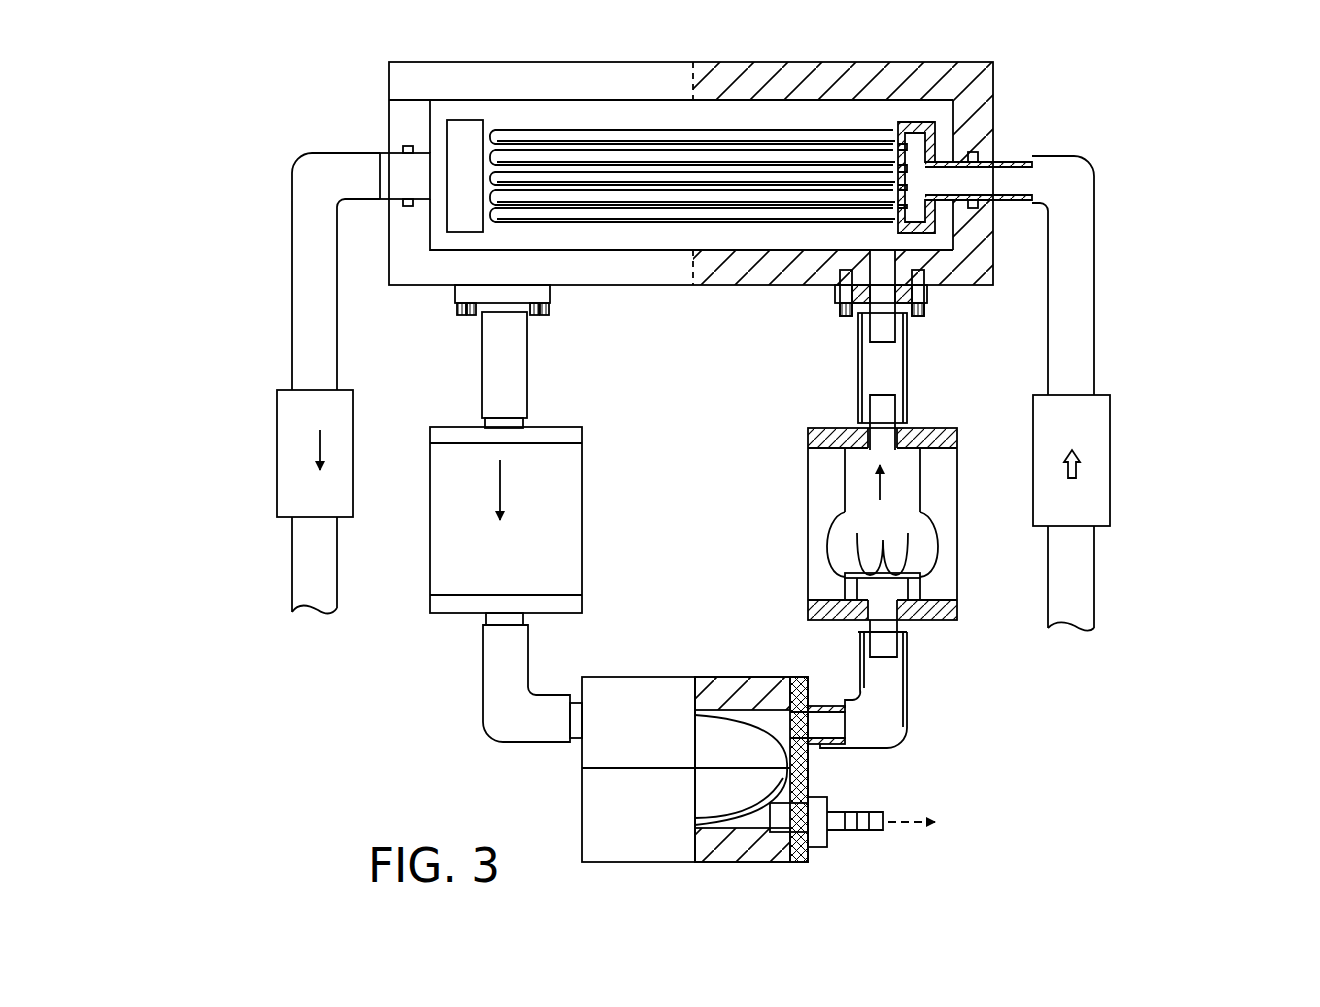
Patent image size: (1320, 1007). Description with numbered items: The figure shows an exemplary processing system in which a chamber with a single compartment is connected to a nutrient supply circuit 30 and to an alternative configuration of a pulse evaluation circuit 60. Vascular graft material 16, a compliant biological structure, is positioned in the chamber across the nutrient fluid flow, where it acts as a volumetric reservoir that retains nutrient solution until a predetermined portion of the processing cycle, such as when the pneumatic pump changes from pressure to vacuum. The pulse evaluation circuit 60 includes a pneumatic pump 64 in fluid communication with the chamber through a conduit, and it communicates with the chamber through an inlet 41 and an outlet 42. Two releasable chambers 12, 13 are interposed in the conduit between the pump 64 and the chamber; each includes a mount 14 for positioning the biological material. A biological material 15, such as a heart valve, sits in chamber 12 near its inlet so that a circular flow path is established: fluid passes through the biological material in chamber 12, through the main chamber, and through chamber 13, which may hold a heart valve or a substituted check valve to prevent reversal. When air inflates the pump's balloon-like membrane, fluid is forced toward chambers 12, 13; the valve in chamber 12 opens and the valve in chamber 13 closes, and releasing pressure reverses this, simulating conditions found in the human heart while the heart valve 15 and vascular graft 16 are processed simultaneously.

The releasable chamber 12 is at (962, 573).
The releasable chamber 13 is at (452, 580).
The mount 14 is at (897, 578).
The biological material 15 is at (865, 560).
The vascular graft material 16 is at (555, 173).
The nutrient supply circuit 30 is at (1077, 290).
The inlet 41 is at (882, 303).
The outlet 42 is at (510, 306).
The pulse evaluation circuit 60 is at (717, 484).
The pneumatic pump 64 is at (808, 855).